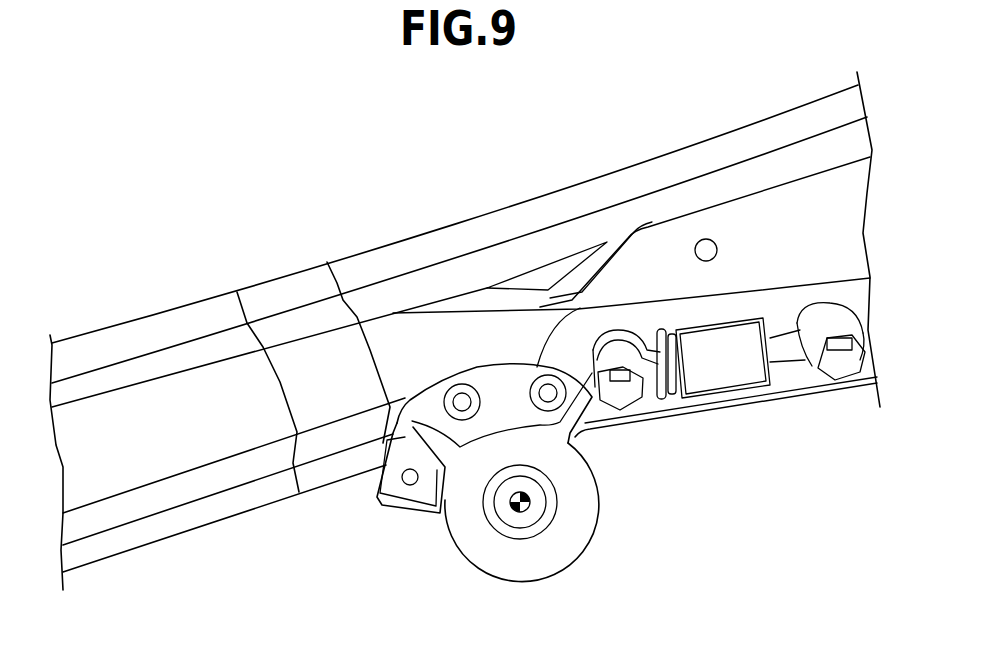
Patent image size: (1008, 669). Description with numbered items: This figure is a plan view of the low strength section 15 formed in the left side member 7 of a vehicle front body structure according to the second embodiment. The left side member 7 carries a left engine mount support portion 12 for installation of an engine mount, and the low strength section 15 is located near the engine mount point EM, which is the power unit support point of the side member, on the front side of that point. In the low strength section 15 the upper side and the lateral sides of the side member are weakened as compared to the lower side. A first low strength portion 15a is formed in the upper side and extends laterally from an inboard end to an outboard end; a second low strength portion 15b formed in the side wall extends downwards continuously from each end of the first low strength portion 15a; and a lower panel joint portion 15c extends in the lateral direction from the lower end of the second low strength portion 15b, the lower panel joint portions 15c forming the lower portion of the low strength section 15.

The left side member 7 is at (509, 200).
The left engine mount support portion 12 is at (582, 488).
The engine mount point EM is at (541, 512).
The low strength section 15 is at (285, 254).
The first low strength portion 15a is at (303, 380).
The second low strength portion 15b is at (322, 317).
The lower panel joint portion 15c is at (259, 298).